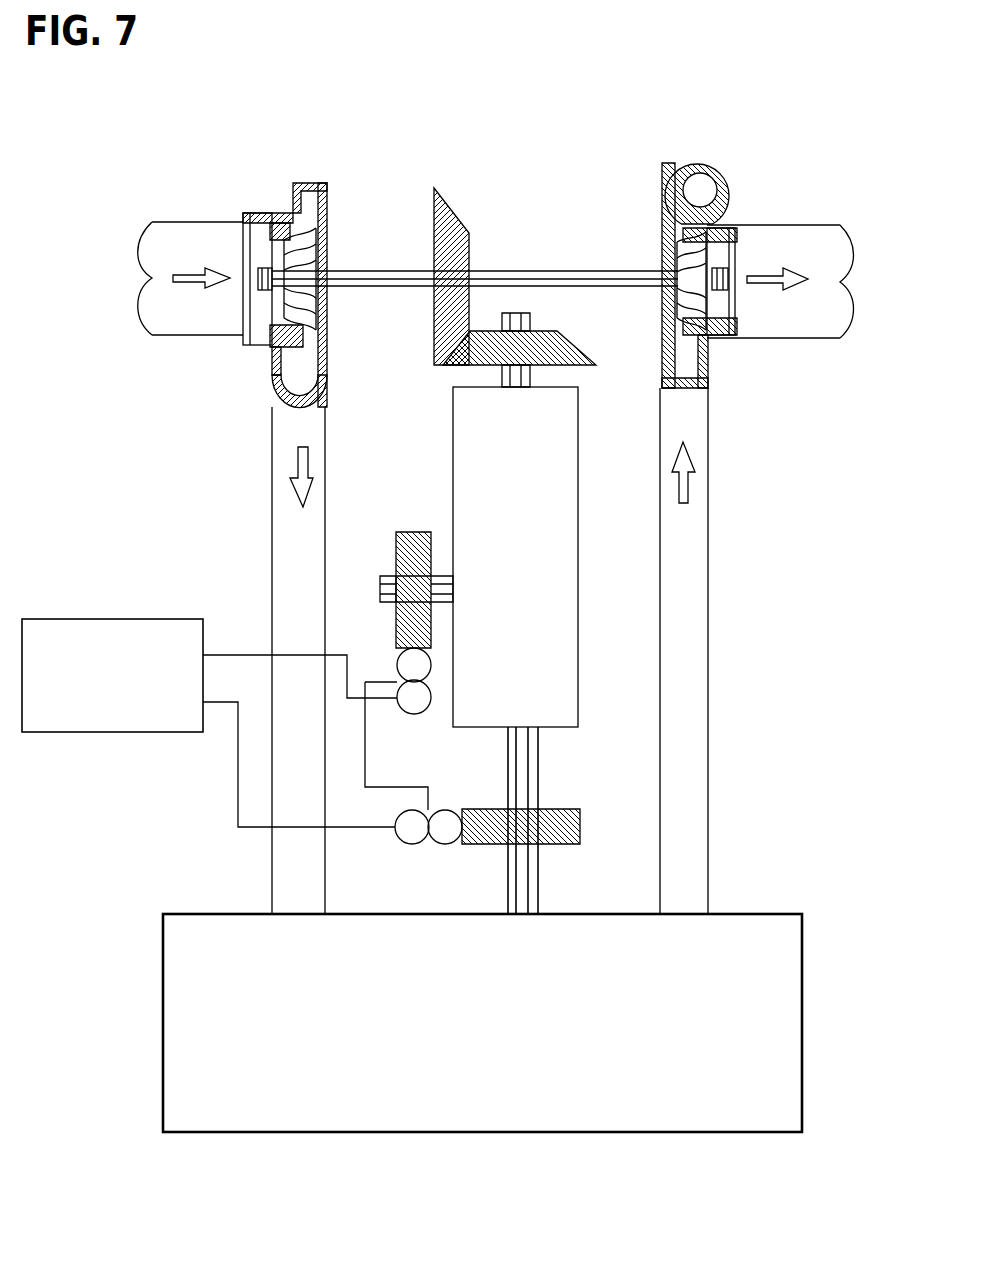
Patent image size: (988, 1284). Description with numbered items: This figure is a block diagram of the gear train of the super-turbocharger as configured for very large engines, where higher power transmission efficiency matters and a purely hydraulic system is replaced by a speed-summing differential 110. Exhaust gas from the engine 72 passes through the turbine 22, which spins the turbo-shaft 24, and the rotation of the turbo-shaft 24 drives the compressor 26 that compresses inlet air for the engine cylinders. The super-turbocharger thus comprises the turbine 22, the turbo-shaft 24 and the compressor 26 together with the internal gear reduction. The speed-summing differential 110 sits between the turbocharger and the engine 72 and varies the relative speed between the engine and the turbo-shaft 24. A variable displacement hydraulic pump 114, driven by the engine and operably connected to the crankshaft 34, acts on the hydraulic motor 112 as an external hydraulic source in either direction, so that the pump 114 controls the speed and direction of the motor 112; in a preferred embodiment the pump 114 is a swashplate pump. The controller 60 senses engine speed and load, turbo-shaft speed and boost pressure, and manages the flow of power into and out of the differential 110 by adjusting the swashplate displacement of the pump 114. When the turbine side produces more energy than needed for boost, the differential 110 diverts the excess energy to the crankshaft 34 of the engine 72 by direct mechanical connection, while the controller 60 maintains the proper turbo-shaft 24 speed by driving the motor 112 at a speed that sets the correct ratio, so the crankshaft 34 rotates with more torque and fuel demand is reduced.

The turbocharger turbine 22 is at (750, 209).
The turbo-shaft 24 is at (378, 271).
The turbocharger compressor 26 is at (250, 188).
The crankshaft 34 is at (535, 878).
The controller 60 is at (145, 619).
The engine 72 is at (778, 980).
The speed-summing differential 110 is at (453, 478).
The hydraulic motor 112 is at (440, 682).
The variable displacement hydraulic pump 114 is at (425, 845).